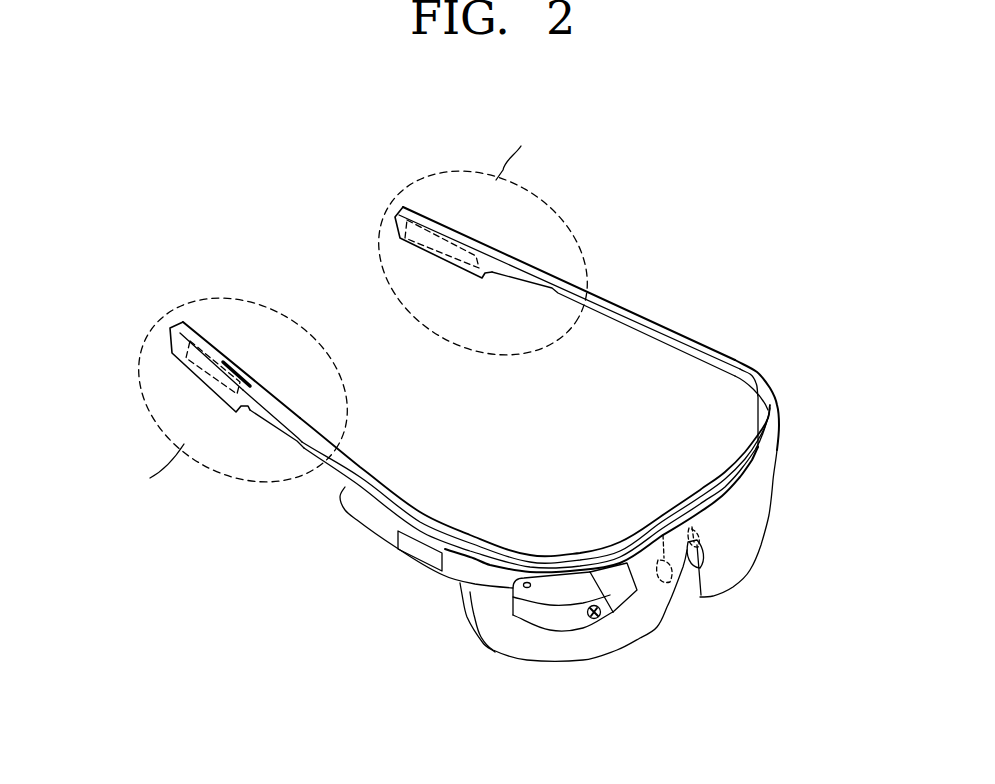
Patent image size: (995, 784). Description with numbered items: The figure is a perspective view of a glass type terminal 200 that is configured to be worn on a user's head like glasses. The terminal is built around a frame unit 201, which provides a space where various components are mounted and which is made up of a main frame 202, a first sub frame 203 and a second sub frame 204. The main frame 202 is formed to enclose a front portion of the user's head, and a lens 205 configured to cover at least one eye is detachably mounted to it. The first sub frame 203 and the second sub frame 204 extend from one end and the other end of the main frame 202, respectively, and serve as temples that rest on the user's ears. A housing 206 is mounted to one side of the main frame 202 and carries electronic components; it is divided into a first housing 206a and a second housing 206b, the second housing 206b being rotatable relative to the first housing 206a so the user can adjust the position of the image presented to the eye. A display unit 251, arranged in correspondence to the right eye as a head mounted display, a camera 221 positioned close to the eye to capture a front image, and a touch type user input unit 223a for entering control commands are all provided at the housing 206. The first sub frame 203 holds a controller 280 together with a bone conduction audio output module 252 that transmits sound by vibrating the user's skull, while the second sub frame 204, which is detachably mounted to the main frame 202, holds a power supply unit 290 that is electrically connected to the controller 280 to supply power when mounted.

The glass type terminal 200 is at (573, 215).
The frame unit 201 is at (540, 409).
The main frame 202 is at (632, 322).
The first sub frame 203 is at (273, 411).
The second sub frame 204 is at (513, 277).
The lens 205 is at (752, 516).
The housing 206 is at (380, 633).
The first housing 206a is at (468, 584).
The second housing 206b is at (543, 615).
The camera 221 is at (597, 620).
The user input unit 223a is at (417, 550).
The display unit 251 is at (627, 592).
The audio output module 252 is at (233, 370).
The controller 280 is at (193, 378).
The power supply unit 290 is at (432, 228).